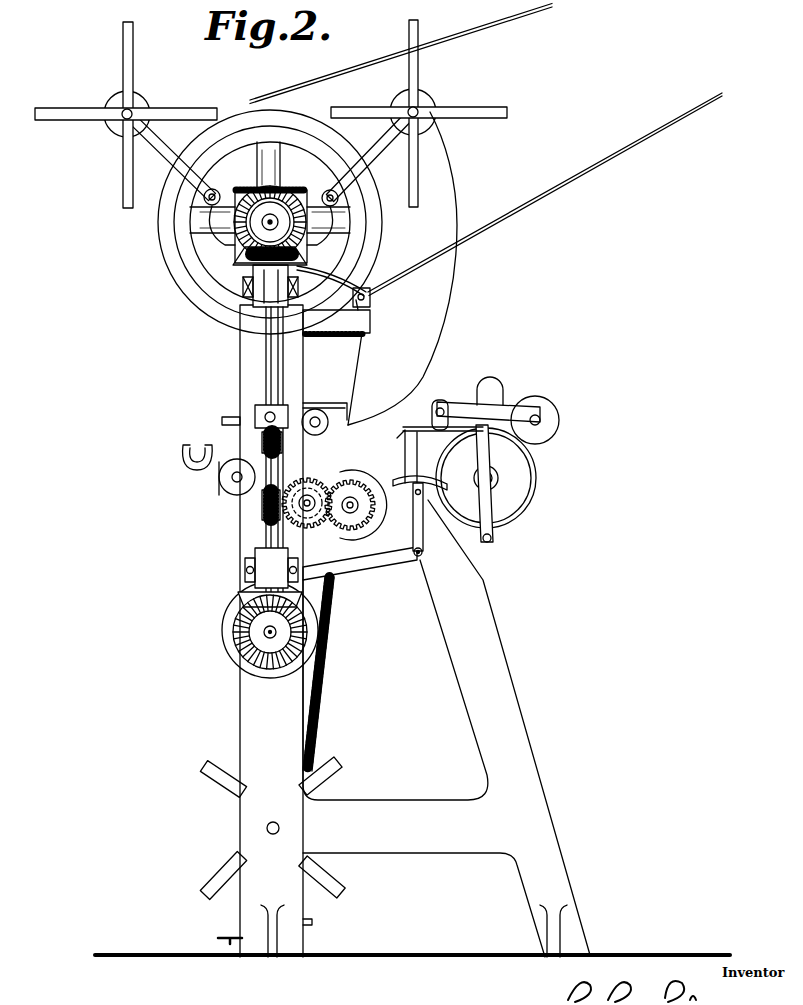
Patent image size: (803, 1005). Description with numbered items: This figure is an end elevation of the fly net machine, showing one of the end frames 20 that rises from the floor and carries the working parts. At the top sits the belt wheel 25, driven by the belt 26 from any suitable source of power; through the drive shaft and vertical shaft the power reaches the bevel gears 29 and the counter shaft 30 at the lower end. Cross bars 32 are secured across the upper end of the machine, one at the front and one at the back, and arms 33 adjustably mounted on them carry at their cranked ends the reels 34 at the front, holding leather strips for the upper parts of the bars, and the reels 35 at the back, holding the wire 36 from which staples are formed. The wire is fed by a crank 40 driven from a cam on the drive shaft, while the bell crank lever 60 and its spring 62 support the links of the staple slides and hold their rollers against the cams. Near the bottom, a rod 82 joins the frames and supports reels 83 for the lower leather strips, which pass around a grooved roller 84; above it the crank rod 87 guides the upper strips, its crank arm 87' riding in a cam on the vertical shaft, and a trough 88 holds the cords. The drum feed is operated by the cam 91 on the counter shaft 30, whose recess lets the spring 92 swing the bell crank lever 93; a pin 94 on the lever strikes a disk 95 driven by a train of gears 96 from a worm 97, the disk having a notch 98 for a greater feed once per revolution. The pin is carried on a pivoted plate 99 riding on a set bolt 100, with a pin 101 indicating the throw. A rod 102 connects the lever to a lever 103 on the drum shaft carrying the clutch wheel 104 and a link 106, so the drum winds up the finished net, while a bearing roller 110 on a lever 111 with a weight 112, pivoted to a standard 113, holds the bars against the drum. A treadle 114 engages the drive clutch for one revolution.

The end frame 20 is at (245, 727).
The belt wheel 25 is at (376, 248).
The belt 26 is at (541, 2).
The bevel gears 29 is at (268, 358).
The counter shaft 30 is at (262, 634).
The cross bar 32 is at (208, 190).
The arm 33 is at (164, 144).
The reel 34 is at (126, 115).
The reel 35 is at (419, 113).
The wire 36 is at (447, 300).
The crank 40 is at (353, 374).
The bell crank lever 60 is at (365, 301).
The spring 62 is at (326, 335).
The rod 82 is at (280, 829).
The reel 83 is at (219, 873).
The grooved roller 84 is at (219, 493).
The crank rod 87 is at (239, 417).
The crank arm 87' is at (324, 402).
The trough 88 is at (198, 452).
The cam 91 is at (222, 632).
The spring 92 is at (320, 690).
The bell crank lever 93 is at (358, 562).
The pin 94 is at (438, 517).
The disk 95 is at (354, 478).
The train of gears 96 is at (320, 477).
The worm 97 is at (262, 510).
The notch 98 is at (381, 524).
The plate 99 is at (444, 548).
The set bolt 100 is at (410, 467).
The pin 101 is at (426, 425).
The rod 102 is at (423, 436).
The lever 103 is at (504, 462).
The clutch wheel 104 is at (531, 473).
The link 106 is at (484, 510).
The bearing roller 110 is at (546, 408).
The lever 111 is at (488, 401).
The weight 112 is at (506, 379).
The standard 113 is at (453, 399).
The treadle 114 is at (224, 936).